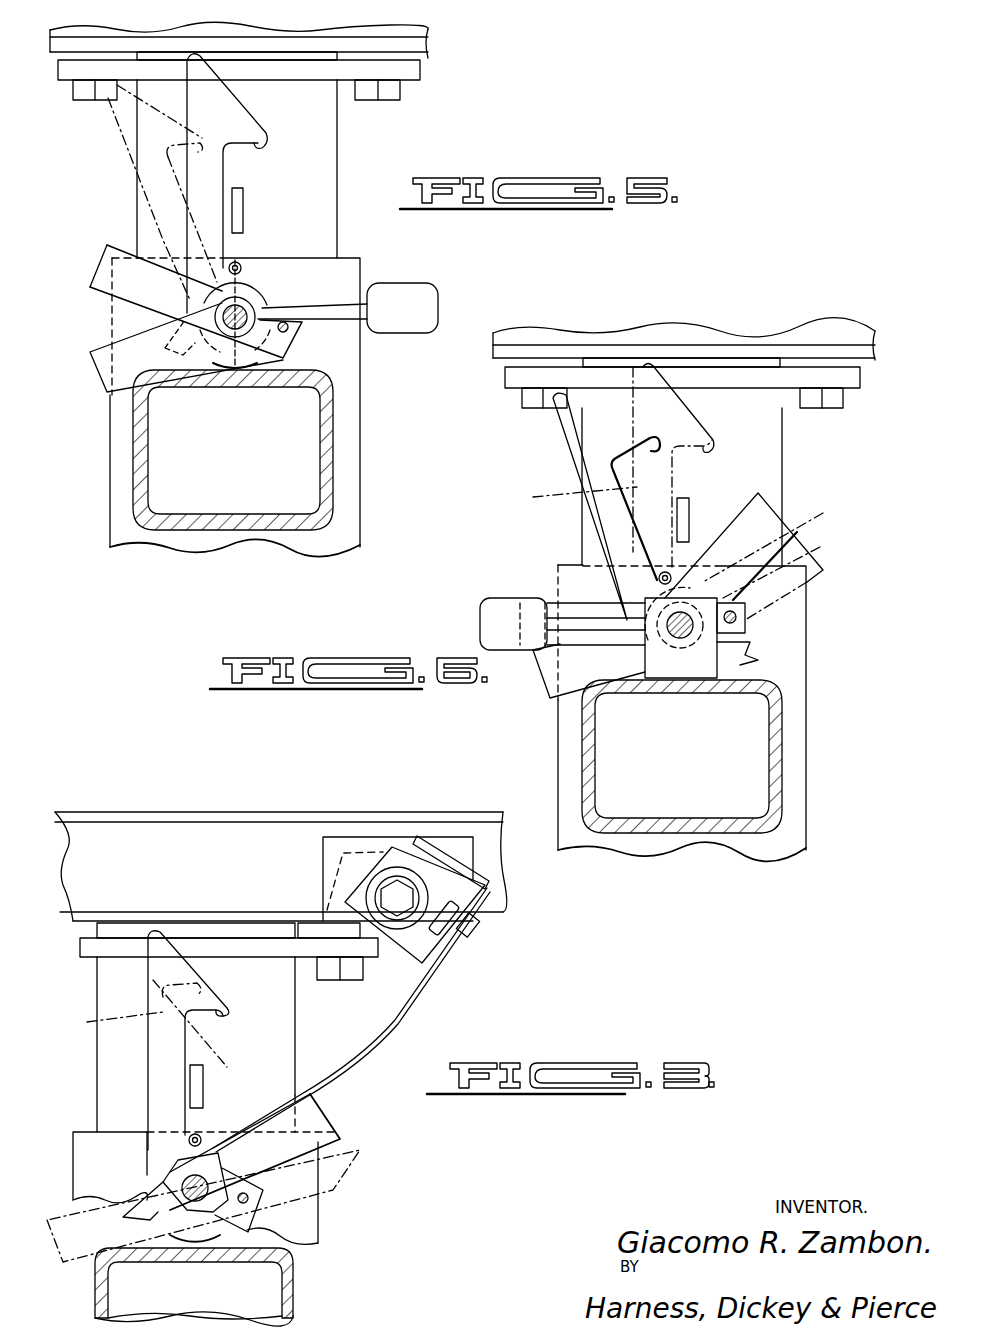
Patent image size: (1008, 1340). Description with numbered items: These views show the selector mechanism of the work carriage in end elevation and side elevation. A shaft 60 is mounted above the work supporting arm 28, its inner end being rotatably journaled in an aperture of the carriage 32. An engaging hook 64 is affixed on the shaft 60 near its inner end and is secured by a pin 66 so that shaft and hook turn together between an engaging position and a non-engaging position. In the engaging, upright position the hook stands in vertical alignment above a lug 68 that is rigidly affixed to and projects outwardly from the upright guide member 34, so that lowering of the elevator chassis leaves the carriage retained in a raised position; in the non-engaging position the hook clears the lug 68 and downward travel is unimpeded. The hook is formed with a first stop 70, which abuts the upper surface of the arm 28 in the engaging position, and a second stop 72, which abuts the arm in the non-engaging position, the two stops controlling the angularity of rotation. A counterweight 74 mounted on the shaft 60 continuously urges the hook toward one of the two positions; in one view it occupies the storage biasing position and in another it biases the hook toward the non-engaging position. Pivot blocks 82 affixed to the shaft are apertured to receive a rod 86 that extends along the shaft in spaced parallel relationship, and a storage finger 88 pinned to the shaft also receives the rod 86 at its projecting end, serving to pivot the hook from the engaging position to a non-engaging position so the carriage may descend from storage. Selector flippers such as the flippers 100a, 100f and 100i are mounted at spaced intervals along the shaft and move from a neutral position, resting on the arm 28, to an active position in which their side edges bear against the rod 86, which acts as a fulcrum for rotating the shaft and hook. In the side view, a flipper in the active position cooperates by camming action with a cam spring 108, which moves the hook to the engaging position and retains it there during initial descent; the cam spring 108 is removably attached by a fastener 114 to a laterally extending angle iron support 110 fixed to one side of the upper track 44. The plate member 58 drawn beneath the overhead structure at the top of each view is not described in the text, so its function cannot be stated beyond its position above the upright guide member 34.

In FIG. 5, the work supporting arm 28 is at (330, 452).
In FIG. 6, the work supporting arm 28 is at (775, 724).
In FIG. 8, the work supporting arm 28 is at (285, 1292).
In FIG. 5, the carriage 32 is at (352, 262).
In FIG. 6, the carriage 32 is at (800, 762).
In FIG. 8, the carriage 32 is at (308, 1220).
In FIG. 5, the upright guide member 34 is at (327, 136).
In FIG. 6, the upright guide member 34 is at (765, 432).
In FIG. 8, the upright guide member 34 is at (282, 1005).
In FIG. 8, the upper track 44 is at (495, 887).
In FIG. 5, the mounting plate 58 is at (407, 74).
In FIG. 6, the mounting plate 58 is at (860, 378).
In FIG. 8, the mounting plate 58 is at (237, 947).
In FIG. 5, the shaft 60 is at (235, 348).
In FIG. 6, the shaft 60 is at (680, 655).
In FIG. 8, the shaft 60 is at (197, 1202).
In FIG. 5, the engaging hook 64 is at (222, 163).
In FIG. 6, the engaging hook 64 is at (575, 471).
In FIG. 8, the engaging hook 64 is at (157, 970).
In FIG. 5, the pin 66 is at (238, 265).
In FIG. 6, the pin 66 is at (655, 582).
In FIG. 8, the pin 66 is at (200, 1136).
In FIG. 5, the lug 68 is at (243, 205).
In FIG. 6, the lug 68 is at (690, 512).
In FIG. 8, the lug 68 is at (207, 1092).
In FIG. 5, the first stop 70 is at (282, 372).
In FIG. 6, the first stop 70 is at (720, 660).
In FIG. 8, the first stop 70 is at (250, 1248).
In FIG. 5, the second stop 72 is at (172, 378).
In FIG. 6, the second stop 72 is at (635, 684).
In FIG. 8, the second stop 72 is at (150, 1250).
In FIG. 5, the counterweight 74 is at (422, 296).
In FIG. 6, the counterweight 74 is at (483, 608).
In FIG. 8, the pivot block 82 is at (264, 1193).
In FIG. 5, the rod 86 is at (297, 330).
In FIG. 6, the rod 86 is at (748, 620).
In FIG. 8, the rod 86 is at (243, 1192).
In FIG. 5, the storage finger 88 is at (100, 262).
In FIG. 6, the selector flipper 100a is at (833, 530).
In FIG. 8, the selector flipper 100a is at (338, 1140).
In FIG. 5, the selector flipper 100f is at (95, 352).
In FIG. 8, the selector flipper 100f is at (72, 1258).
In FIG. 6, the selector flipper 100i is at (545, 678).
In FIG. 8, the cam spring 108 is at (357, 1070).
In FIG. 8, the angle iron support 110 is at (432, 850).
In FIG. 8, the fastener 114 is at (478, 928).